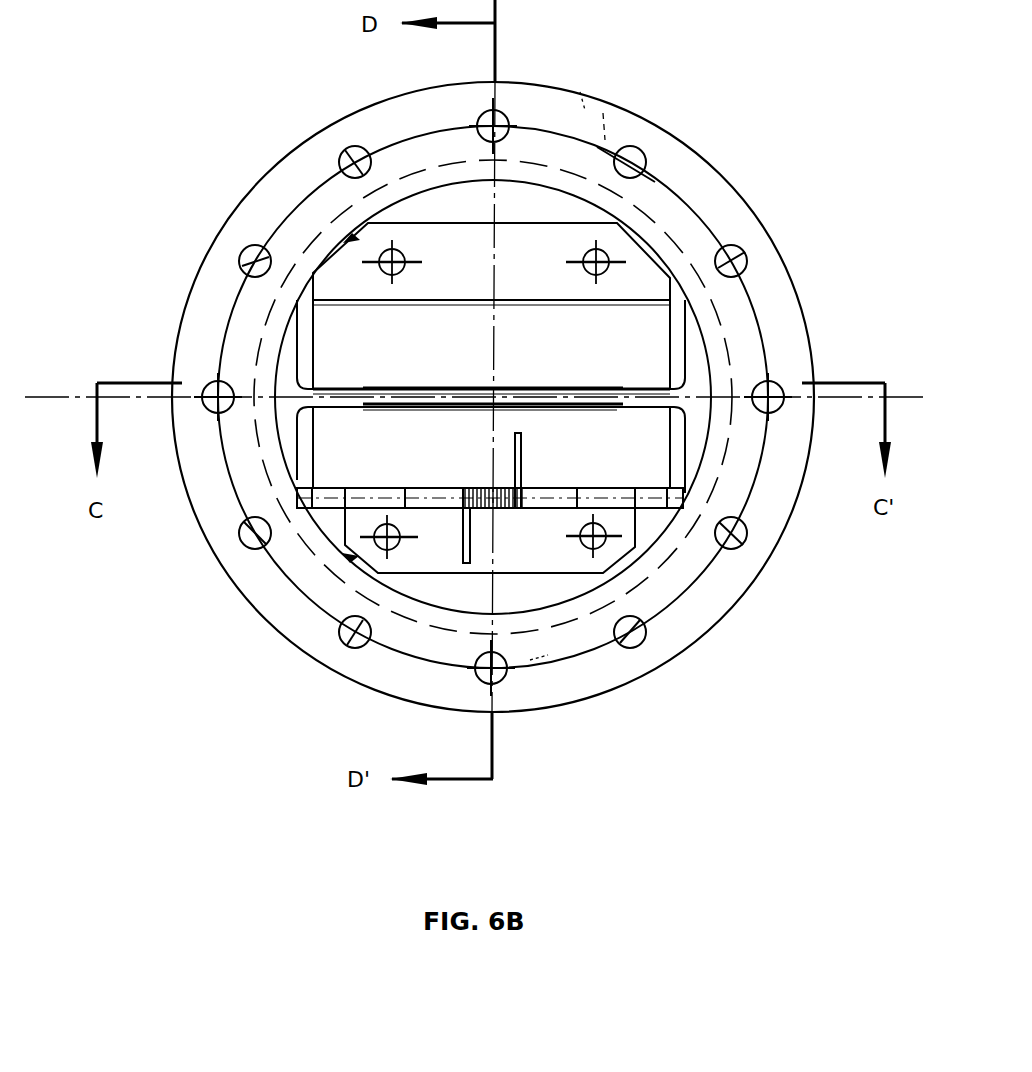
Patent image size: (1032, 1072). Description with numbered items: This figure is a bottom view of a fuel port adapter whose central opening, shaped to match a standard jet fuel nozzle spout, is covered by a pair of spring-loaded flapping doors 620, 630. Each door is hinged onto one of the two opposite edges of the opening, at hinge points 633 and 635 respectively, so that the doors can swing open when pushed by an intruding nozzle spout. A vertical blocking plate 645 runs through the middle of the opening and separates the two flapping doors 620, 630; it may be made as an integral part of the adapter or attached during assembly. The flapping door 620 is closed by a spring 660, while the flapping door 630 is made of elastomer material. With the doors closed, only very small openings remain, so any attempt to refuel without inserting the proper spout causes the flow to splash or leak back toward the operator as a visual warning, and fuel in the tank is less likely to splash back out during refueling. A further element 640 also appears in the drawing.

The flapping door 620 is at (583, 349).
The flapping door 630 is at (580, 460).
The hinge point 633 is at (571, 551).
The hinge point 635 is at (571, 245).
The guide rail 640 is at (412, 480).
The vertical blocking plate 645 is at (417, 389).
The spring 660 is at (484, 477).